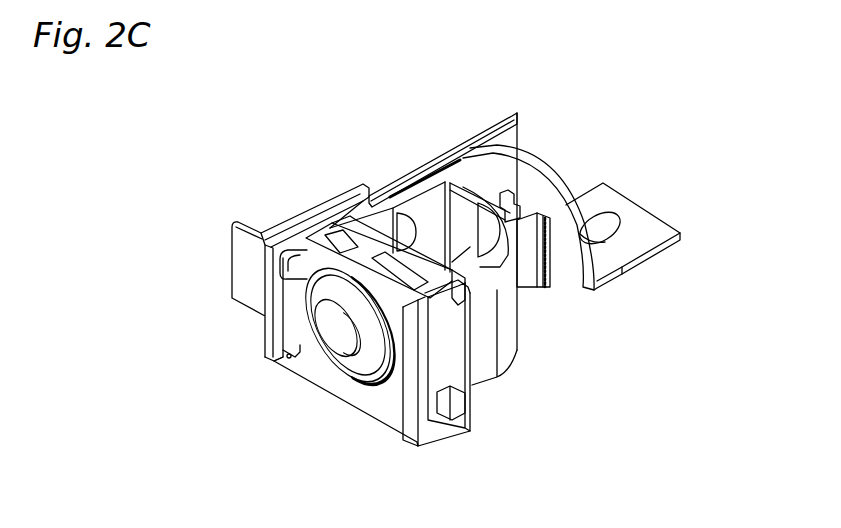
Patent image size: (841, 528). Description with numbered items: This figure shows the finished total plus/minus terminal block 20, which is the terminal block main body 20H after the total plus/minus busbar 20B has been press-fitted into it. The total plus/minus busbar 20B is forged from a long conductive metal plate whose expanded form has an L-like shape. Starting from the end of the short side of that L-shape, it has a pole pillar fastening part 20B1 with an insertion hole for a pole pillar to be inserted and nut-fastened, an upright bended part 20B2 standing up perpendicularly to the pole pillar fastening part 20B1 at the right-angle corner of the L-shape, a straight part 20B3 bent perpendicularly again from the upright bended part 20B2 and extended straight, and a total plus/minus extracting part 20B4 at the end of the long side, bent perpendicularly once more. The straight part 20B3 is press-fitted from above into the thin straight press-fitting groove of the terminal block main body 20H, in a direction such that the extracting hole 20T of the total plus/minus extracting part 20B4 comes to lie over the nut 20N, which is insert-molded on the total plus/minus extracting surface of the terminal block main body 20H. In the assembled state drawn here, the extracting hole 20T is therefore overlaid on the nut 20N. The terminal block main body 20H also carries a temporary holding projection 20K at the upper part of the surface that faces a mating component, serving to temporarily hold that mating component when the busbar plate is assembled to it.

The total plus/minus terminal block 20 is at (641, 72).
The terminal block main body 20H is at (522, 107).
The total plus/minus busbar 20B is at (619, 184).
The pole pillar fastening part 20B1 is at (627, 216).
The upright bended part 20B2 is at (530, 150).
The straight part 20B3 is at (465, 136).
The total plus/minus extracting part 20B4 is at (287, 358).
The temporary holding projection 20K is at (252, 282).
The extracting hole 20T is at (334, 350).
The nut 20N is at (390, 332).